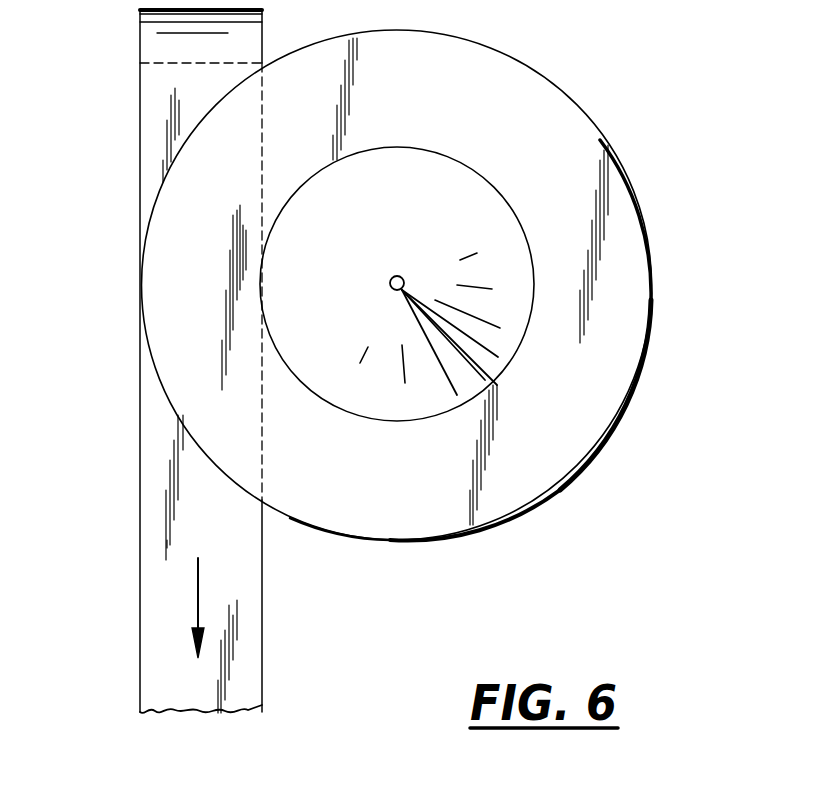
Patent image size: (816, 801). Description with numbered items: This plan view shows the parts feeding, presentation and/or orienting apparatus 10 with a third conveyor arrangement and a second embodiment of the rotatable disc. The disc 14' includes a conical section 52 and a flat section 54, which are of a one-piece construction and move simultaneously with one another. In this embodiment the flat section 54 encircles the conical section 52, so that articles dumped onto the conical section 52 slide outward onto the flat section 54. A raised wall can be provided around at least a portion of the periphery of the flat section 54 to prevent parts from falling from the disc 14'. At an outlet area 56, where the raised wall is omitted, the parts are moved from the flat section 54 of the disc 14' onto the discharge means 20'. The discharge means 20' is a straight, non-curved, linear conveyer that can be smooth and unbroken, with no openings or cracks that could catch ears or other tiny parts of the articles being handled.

The tape roll assembly 10 is at (655, 145).
The disc 14' is at (512, 340).
The conical section 52 is at (500, 345).
The flat section 54 is at (545, 468).
The outlet area 56 is at (198, 453).
The discharge means 20' is at (153, 361).